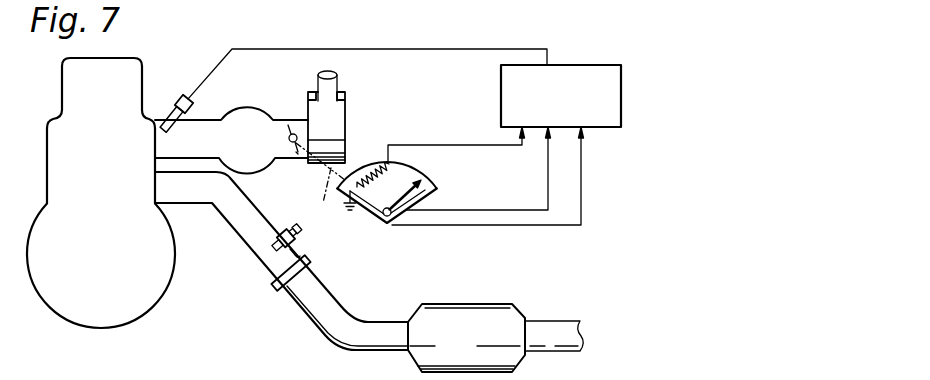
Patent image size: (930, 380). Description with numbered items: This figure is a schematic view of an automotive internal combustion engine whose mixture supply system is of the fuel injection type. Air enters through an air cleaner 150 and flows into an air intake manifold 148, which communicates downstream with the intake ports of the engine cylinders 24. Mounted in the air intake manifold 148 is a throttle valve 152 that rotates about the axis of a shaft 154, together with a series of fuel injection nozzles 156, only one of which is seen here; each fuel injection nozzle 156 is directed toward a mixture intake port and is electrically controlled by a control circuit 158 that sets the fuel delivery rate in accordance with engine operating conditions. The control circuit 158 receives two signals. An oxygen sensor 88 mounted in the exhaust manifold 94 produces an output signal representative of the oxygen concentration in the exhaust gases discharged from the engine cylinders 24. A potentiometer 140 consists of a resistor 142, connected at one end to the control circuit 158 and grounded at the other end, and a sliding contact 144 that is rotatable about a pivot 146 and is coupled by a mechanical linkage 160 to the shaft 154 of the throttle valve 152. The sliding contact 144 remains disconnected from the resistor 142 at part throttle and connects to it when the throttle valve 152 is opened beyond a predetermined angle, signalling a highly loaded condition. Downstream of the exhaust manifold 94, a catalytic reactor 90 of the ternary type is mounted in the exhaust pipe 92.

The engine cylinders 24 is at (110, 202).
The oxygen sensor 88 is at (300, 256).
The catalytic reactor 90 is at (481, 304).
The exhaust pipe 92 is at (380, 320).
The exhaust manifold 94 is at (243, 240).
The potentiometer 140 is at (426, 166).
The resistor 142 is at (372, 168).
The sliding contact 144 is at (422, 188).
The pivot 146 is at (395, 224).
The air intake manifold 148 is at (257, 106).
The air cleaner 150 is at (347, 101).
The throttle valve 152 is at (296, 152).
The shaft 154 is at (289, 138).
The fuel injection nozzle 156 is at (172, 112).
The control circuit 158 is at (501, 100).
The mechanical linkage 160 is at (320, 186).